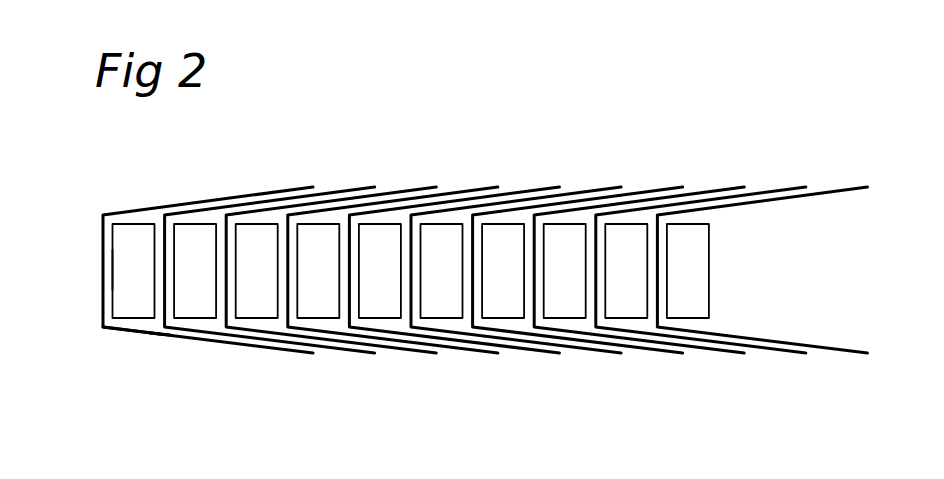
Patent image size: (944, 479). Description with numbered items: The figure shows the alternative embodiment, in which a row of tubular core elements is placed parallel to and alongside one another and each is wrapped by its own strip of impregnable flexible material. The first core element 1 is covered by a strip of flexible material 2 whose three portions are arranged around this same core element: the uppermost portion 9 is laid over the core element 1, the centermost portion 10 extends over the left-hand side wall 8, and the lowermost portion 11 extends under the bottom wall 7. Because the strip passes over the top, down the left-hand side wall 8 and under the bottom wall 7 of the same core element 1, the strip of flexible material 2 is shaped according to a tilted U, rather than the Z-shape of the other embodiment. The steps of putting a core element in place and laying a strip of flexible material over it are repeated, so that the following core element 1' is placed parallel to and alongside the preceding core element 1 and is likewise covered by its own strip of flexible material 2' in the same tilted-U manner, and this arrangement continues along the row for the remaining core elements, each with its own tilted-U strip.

The core element 1 is at (178, 295).
The following core element 1' is at (238, 272).
The strip of impregnable flexible material 2 is at (103, 283).
The strip of impregnable flexible material 2' is at (159, 229).
The bottom wall 7 is at (134, 324).
The left-hand side wall 8 is at (114, 270).
The uppermost portion 9 is at (164, 212).
The centermost portion 10 is at (103, 248).
The lowermost portion 11 is at (163, 336).